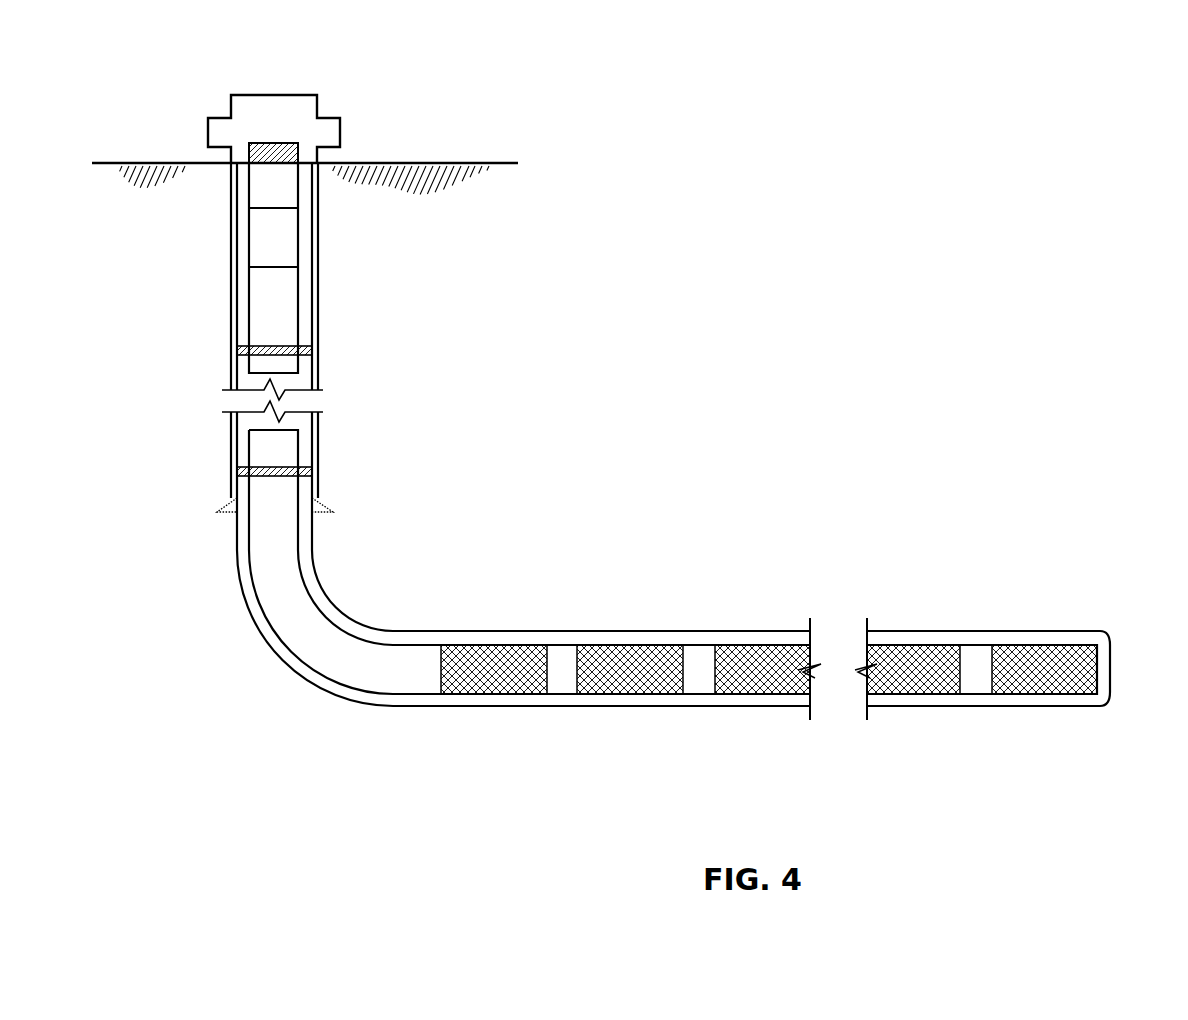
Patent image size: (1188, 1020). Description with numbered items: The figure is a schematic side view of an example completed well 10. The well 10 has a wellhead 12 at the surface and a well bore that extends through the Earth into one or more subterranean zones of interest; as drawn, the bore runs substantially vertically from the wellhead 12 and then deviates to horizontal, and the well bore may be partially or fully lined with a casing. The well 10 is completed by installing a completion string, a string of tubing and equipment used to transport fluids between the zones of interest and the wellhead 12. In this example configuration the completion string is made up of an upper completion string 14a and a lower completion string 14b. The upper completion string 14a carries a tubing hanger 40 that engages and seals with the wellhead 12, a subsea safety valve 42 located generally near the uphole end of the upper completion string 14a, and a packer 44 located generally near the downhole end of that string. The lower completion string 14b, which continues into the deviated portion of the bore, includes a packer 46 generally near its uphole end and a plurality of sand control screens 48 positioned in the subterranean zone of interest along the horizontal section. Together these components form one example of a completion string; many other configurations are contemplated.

The well 10 is at (488, 75).
The wellhead 12 is at (302, 110).
The upper completion string 14a is at (343, 322).
The lower completion string 14b is at (500, 612).
The tubing hanger 40 is at (272, 148).
The subsea safety valve 42 is at (280, 240).
The packer 44 is at (312, 352).
The packer 46 is at (312, 470).
The sand control screens 48 is at (493, 695).